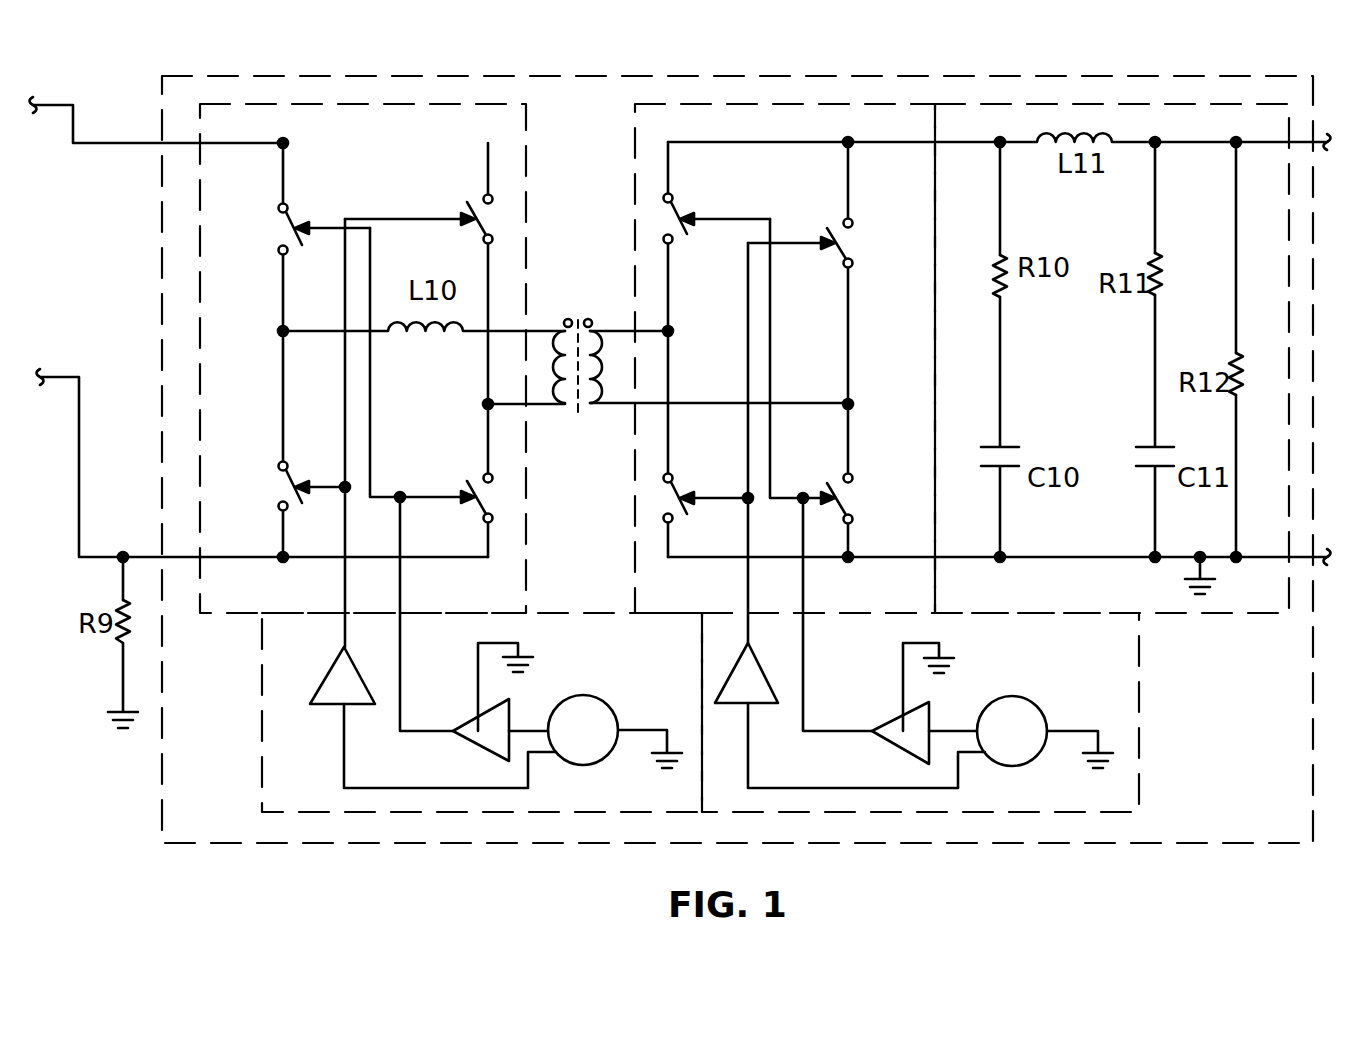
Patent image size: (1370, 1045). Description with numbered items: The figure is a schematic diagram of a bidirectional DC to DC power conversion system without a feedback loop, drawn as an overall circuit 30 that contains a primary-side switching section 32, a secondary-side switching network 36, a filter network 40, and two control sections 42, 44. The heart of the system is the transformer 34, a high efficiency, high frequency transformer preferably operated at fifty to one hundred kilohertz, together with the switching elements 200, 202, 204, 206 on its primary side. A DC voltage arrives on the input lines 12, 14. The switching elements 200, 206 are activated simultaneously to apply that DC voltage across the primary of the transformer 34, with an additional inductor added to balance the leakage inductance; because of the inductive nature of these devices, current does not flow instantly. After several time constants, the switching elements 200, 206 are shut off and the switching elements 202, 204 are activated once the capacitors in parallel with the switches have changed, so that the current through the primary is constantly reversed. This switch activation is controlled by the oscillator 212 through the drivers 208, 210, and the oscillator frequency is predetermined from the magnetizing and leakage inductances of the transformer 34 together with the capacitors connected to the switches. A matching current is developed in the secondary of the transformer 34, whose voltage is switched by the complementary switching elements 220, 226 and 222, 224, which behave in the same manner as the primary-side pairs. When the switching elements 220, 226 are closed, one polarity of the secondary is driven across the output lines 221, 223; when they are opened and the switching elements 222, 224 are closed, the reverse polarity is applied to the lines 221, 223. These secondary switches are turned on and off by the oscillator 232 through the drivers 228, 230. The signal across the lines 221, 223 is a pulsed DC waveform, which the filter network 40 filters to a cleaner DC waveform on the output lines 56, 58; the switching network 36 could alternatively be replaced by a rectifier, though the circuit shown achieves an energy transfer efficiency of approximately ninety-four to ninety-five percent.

The line 12 is at (42, 103).
The line 14 is at (44, 374).
The isolation amplifier circuit 30 is at (1313, 772).
The input switching circuit 32 is at (527, 548).
The transformer 34 is at (570, 405).
The switching network 36 is at (635, 582).
The filter network 40 is at (1280, 612).
The first switch control circuit 42 is at (262, 775).
The second switch control circuit 44 is at (1139, 730).
The line 56 is at (1193, 145).
The line 58 is at (1266, 555).
The switching element 200 is at (288, 228).
The switching element 202 is at (284, 484).
The switching element 204 is at (478, 196).
The switching element 206 is at (480, 477).
The driver 208 is at (327, 676).
The driver 210 is at (470, 742).
The oscillator 212 is at (608, 705).
The switching element 220 is at (682, 208).
The output line 221 is at (872, 141).
The switching element 222 is at (680, 472).
The output line 223 is at (898, 558).
The switching element 224 is at (850, 248).
The switching element 226 is at (840, 500).
The driver 228 is at (768, 706).
The driver 230 is at (882, 722).
The oscillator 232 is at (1036, 705).